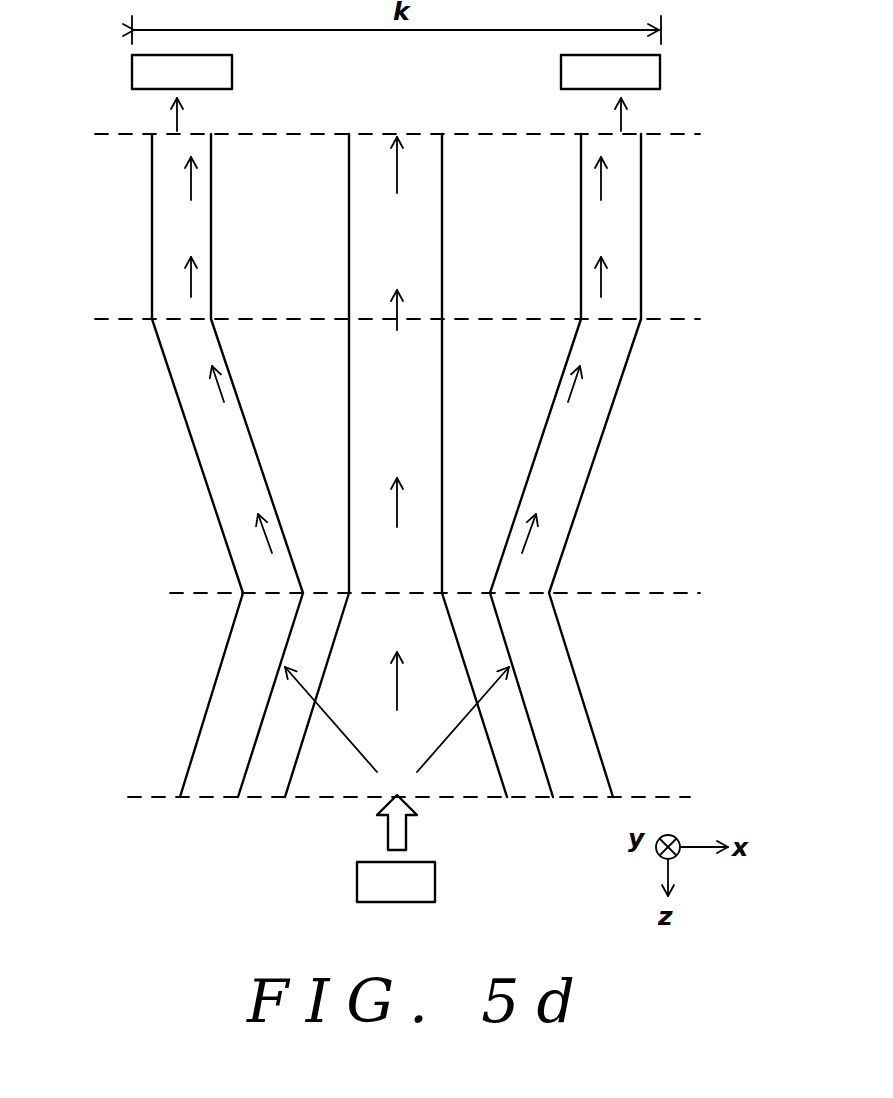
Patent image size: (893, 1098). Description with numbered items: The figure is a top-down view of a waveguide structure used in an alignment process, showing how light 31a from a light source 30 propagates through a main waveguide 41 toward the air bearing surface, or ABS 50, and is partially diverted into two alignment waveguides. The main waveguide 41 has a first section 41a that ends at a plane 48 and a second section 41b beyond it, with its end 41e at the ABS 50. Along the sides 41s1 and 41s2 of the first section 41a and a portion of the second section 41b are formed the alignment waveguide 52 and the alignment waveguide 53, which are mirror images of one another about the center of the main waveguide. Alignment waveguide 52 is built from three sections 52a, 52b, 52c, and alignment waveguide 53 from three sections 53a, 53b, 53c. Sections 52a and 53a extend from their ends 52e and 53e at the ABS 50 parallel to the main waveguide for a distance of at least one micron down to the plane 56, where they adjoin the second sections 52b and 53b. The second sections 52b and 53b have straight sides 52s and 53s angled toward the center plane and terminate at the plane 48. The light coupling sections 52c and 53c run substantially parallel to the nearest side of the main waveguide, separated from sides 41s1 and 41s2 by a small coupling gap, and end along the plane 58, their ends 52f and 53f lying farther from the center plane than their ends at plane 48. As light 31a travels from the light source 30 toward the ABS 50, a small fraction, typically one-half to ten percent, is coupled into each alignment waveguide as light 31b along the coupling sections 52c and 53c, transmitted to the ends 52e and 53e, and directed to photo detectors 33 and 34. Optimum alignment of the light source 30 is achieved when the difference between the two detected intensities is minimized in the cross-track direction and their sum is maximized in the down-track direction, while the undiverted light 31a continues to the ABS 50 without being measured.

The light source 30 is at (422, 880).
The light 31a is at (397, 168).
The light 31b is at (175, 115).
The photo detector 33 is at (150, 70).
The photo detector 34 is at (642, 68).
The main waveguide 41 is at (396, 465).
The first section 41a is at (435, 428).
The second section 41b is at (425, 622).
The end 41e is at (375, 128).
The side 41s1 is at (348, 415).
The side 41s2 is at (443, 415).
The plane 48 is at (432, 592).
The ABS 50 is at (395, 134).
The alignment waveguide 52 is at (227, 465).
The section 52a is at (165, 226).
The second section 52b is at (238, 535).
The light coupling section 52c is at (230, 690).
The end 52e is at (205, 130).
The left channel inlet 52f is at (262, 800).
The straight side 52s is at (215, 493).
The alignment waveguide 53 is at (565, 465).
The section 53a is at (625, 222).
The second section 53b is at (556, 533).
The light coupling section 53c is at (565, 688).
The end 53e is at (574, 130).
The right channel inlet 53f is at (580, 800).
The straight side 53s is at (578, 490).
The plane 56 is at (395, 319).
The plane 58 is at (412, 797).